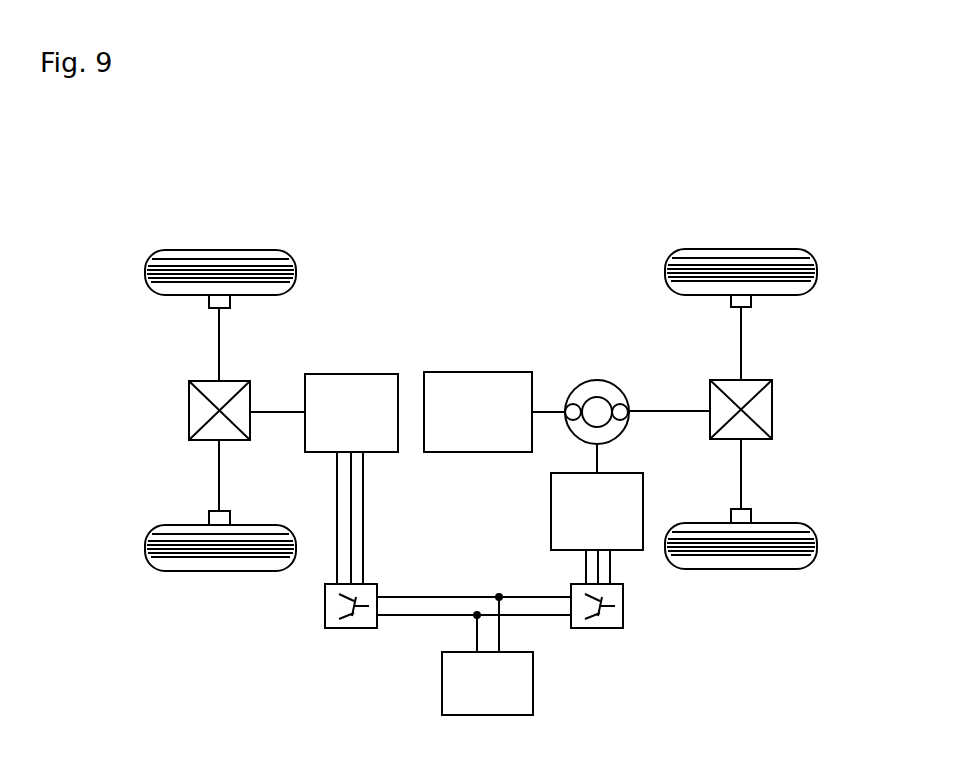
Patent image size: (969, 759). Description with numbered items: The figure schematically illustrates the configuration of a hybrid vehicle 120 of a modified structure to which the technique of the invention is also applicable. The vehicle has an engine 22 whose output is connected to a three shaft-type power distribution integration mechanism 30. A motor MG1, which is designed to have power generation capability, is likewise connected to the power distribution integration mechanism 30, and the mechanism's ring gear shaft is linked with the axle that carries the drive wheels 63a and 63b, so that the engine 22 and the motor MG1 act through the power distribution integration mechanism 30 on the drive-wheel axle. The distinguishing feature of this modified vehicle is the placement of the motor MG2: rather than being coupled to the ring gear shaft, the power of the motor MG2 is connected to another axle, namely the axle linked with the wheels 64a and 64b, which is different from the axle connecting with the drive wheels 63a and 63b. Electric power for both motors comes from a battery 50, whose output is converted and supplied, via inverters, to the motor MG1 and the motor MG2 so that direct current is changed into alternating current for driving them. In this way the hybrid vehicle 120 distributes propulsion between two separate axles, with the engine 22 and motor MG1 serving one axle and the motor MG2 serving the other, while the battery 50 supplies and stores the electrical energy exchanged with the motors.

The hybrid vehicle 120 is at (505, 231).
The wheel 64a is at (220, 250).
The wheel 64b is at (220, 571).
The drive wheel 63a is at (740, 249).
The drive wheel 63b is at (742, 569).
The motor MG2 is at (350, 374).
The motor MG1 is at (551, 513).
The engine 22 is at (479, 371).
The power distribution integration mechanism 30 is at (598, 380).
The battery 50 is at (533, 683).